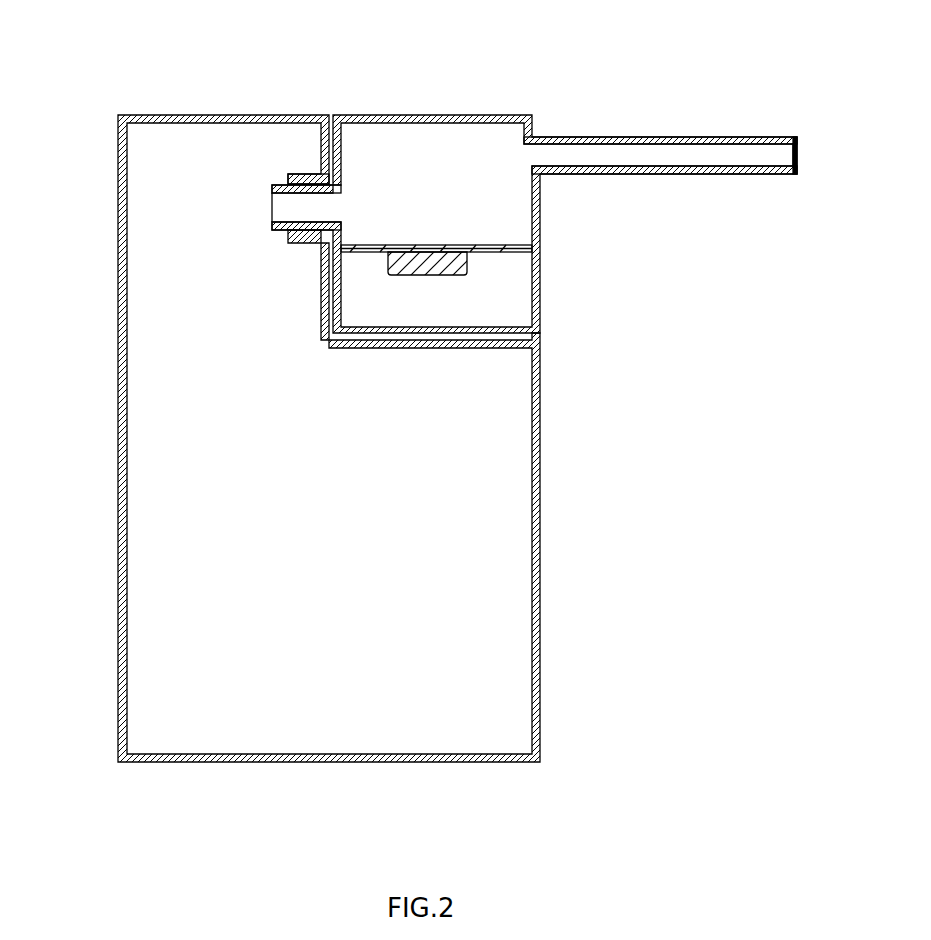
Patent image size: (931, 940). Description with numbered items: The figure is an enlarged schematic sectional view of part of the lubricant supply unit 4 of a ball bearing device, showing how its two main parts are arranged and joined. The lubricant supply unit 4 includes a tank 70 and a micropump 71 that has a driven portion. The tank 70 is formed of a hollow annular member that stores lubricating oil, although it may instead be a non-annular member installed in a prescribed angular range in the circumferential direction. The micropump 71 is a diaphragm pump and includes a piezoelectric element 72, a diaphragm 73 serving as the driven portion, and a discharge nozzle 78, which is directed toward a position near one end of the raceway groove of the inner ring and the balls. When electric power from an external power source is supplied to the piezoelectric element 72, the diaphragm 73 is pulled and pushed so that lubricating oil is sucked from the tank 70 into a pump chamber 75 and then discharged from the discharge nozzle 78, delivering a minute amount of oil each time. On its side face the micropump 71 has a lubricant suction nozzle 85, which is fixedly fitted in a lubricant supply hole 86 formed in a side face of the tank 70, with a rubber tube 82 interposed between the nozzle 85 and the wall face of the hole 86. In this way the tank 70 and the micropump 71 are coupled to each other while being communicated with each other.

The lubricant supply unit 4 is at (483, 103).
The tank 70 is at (119, 365).
The micropump 71 is at (425, 117).
The piezoelectric element 72 is at (460, 263).
The diaphragm 73 is at (473, 245).
The pump chamber 75 is at (385, 122).
The discharge nozzle 78 is at (737, 140).
The rubber tube 82 is at (308, 177).
The lubricant suction nozzle 85 is at (272, 188).
The lubricant supply hole 86 is at (300, 222).